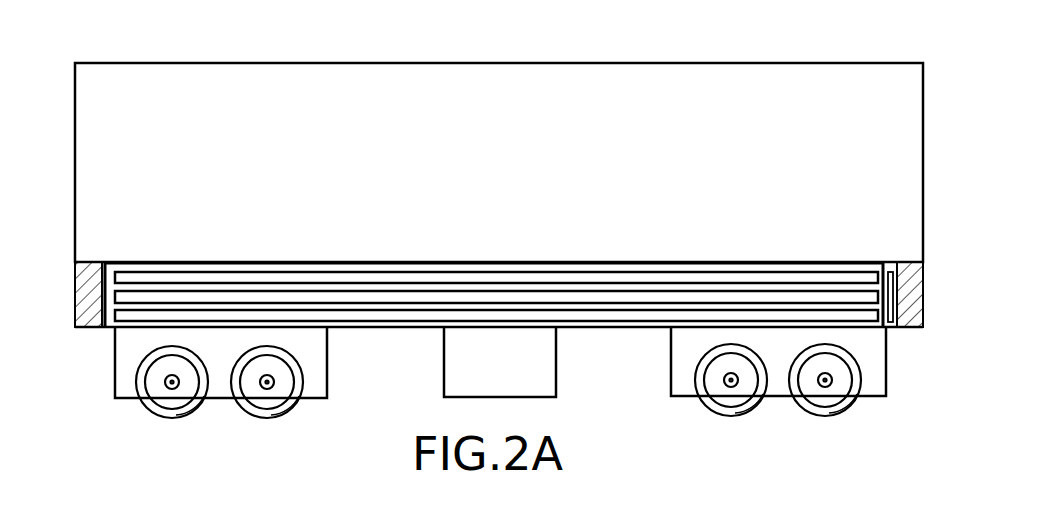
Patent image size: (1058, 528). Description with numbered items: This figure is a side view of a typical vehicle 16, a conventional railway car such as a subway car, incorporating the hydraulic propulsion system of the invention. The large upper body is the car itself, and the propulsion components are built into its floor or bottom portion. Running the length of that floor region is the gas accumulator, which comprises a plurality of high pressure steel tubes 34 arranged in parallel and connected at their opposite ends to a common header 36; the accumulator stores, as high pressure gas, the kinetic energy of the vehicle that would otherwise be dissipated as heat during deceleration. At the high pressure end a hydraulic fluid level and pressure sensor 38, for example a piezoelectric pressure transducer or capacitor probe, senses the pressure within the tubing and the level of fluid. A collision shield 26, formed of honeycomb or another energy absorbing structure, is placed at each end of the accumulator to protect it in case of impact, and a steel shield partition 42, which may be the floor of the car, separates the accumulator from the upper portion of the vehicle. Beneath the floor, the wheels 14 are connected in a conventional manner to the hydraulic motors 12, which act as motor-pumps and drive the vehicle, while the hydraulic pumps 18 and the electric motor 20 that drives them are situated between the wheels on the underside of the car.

The vehicle 16 is at (752, 73).
The collision shield 26 is at (88, 322).
The steel shield partition 42 is at (402, 247).
The common header 36 is at (110, 273).
The high pressure steel tubes 34 is at (795, 306).
The hydraulic fluid level and pressure sensor 38 is at (890, 327).
The hydraulic motors 12 is at (327, 382).
The wheels 14 is at (247, 407).
The hydraulic pumps 18 is at (544, 366).
The electric motor 20 is at (543, 378).